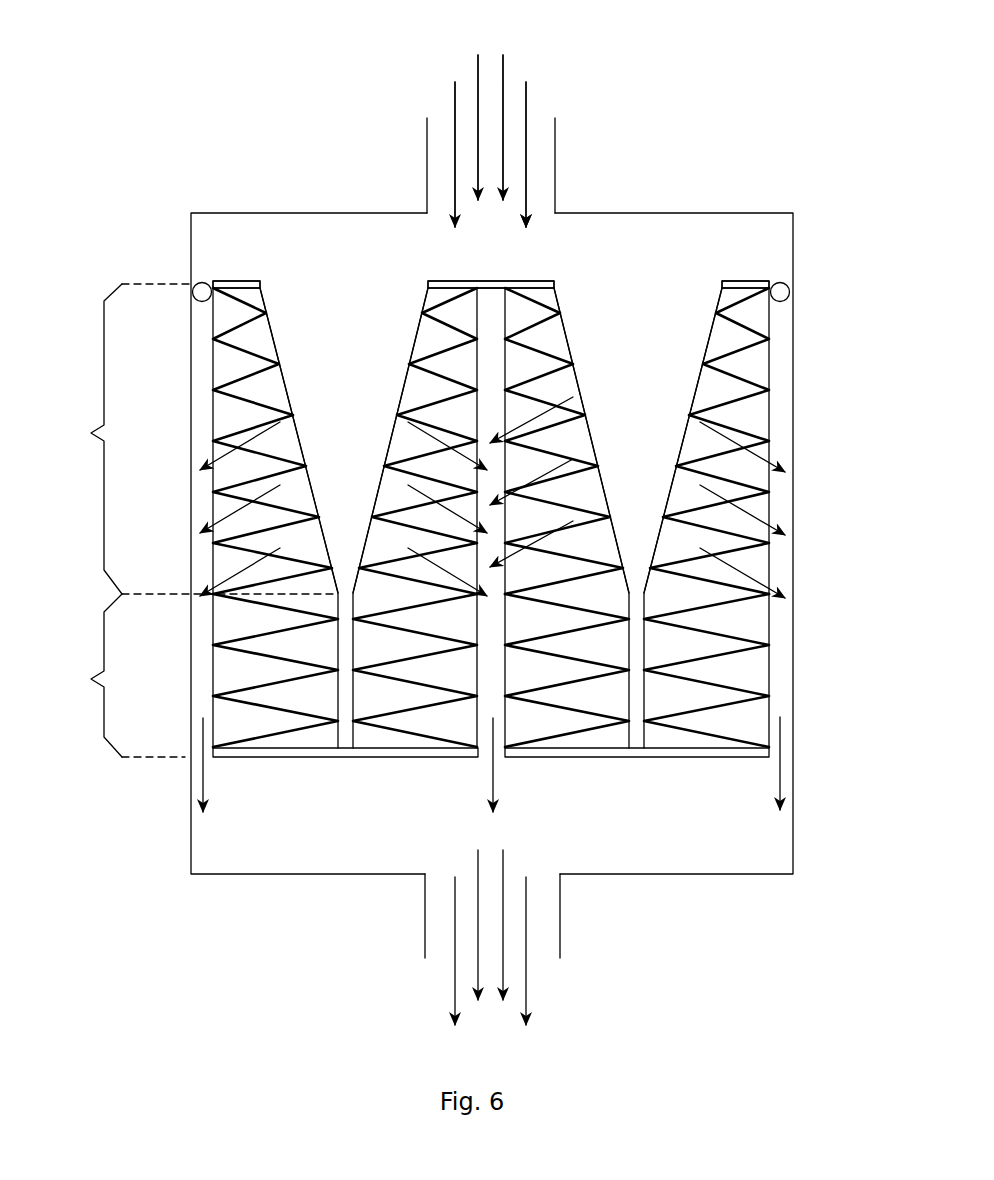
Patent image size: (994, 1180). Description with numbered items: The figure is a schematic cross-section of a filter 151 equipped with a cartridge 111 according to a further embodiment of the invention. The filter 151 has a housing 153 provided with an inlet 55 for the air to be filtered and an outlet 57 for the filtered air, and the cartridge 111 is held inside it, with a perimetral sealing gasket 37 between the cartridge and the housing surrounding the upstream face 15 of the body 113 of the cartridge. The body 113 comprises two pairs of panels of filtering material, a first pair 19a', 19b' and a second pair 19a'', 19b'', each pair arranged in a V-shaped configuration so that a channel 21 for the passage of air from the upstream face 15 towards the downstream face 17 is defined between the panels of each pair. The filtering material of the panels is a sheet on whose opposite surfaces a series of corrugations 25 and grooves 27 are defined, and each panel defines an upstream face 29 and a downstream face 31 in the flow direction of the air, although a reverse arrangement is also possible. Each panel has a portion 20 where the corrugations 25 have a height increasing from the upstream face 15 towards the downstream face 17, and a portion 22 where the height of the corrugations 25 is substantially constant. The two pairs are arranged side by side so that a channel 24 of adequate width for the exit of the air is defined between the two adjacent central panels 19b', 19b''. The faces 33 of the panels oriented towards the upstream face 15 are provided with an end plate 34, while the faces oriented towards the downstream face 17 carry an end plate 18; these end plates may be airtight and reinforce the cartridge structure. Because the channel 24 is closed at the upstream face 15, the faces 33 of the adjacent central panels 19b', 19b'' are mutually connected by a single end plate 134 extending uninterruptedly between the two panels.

The upstream face 15 is at (294, 272).
The downstream face 17 is at (253, 760).
The end plate 18 is at (358, 757).
The panel 19a' is at (304, 298).
The panel 19b' is at (391, 298).
The panel 19a'' is at (701, 298).
The panel 19b'' is at (611, 298).
The portion 20 is at (197, 439).
The channel 21 is at (492, 463).
The portion 22 is at (120, 675).
The channel 24 is at (502, 705).
The corrugations 25 is at (233, 405).
The grooves 27 is at (238, 606).
The upstream face of the panels 29 is at (405, 380).
The downstream face of the panels 31 is at (215, 480).
The face 33 is at (253, 280).
The end plate 34 is at (238, 276).
The perimetral sealing gasket 37 is at (790, 291).
The inlet 55 is at (555, 157).
The outlet 57 is at (427, 923).
The cartridge 111 is at (740, 813).
The body 113 is at (775, 502).
The single end plate 134 is at (498, 283).
The filter 151 is at (160, 895).
The housing 153 is at (190, 228).